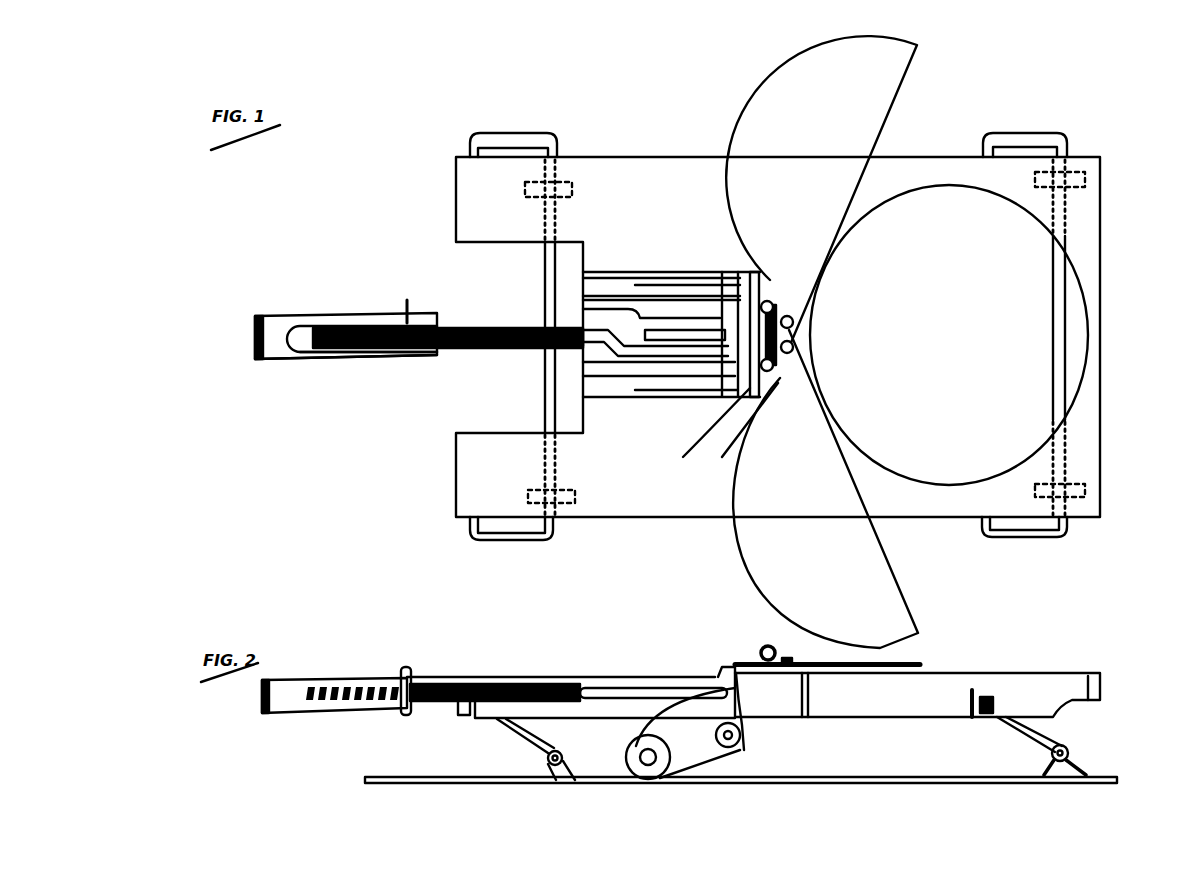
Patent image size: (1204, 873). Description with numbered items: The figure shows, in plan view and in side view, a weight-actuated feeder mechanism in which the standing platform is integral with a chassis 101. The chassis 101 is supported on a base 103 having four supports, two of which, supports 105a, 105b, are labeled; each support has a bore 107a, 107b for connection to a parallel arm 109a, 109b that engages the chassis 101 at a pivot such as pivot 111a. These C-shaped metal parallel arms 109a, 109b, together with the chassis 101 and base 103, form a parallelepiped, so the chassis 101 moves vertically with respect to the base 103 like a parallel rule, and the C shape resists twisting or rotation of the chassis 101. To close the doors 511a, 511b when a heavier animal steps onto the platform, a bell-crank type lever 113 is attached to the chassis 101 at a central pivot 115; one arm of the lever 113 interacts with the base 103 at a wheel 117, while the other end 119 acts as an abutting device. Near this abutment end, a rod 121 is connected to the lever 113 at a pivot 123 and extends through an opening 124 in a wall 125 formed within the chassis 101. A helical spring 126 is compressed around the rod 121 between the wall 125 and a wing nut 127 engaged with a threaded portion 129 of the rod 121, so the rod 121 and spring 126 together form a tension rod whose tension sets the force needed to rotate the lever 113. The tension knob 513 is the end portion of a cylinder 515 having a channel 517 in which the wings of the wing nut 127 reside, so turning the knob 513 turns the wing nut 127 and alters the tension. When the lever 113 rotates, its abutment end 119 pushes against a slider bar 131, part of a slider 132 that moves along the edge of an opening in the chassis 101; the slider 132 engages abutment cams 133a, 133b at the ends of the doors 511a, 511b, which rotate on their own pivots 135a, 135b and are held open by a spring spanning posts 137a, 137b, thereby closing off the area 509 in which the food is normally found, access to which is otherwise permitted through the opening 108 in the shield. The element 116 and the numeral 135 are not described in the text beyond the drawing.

In FIG. 1, the chassis 101 is at (655, 196).
In FIG. 2, the base 103 is at (445, 785).
In FIG. 1, the support 105a is at (560, 505).
In FIG. 2, the support 105a is at (575, 780).
In FIG. 1, the support 105b is at (1090, 505).
In FIG. 2, the support 105b is at (1060, 762).
In FIG. 1, the bore 107a is at (1020, 134).
In FIG. 2, the bore 107a is at (540, 776).
In FIG. 2, the bore 107b is at (1075, 752).
In FIG. 2, the opening 108 is at (978, 673).
In FIG. 2, the parallel arm 109a is at (505, 742).
In FIG. 1, the parallel arm 109b is at (527, 133).
In FIG. 2, the parallel arm 109b is at (1068, 732).
In FIG. 2, the pivot 111a is at (458, 705).
In FIG. 2, the lever 113 is at (688, 733).
In FIG. 2, the pivot 115 is at (730, 750).
In FIG. 2, the clamp 116 is at (993, 700).
In FIG. 1, the wheel 117 is at (583, 300).
In FIG. 2, the wheel 117 is at (652, 782).
In FIG. 2, the other end of the lever 119 is at (722, 668).
In FIG. 1, the rod 121 is at (583, 363).
In FIG. 2, the rod 121 is at (615, 672).
In FIG. 1, the pivot 123 is at (712, 272).
In FIG. 2, the pivot 123 is at (725, 672).
In FIG. 1, the opening 124 is at (583, 350).
In FIG. 1, the wall 125 is at (583, 322).
In FIG. 2, the wall 125 is at (578, 678).
In FIG. 1, the helical spring 126 is at (440, 350).
In FIG. 2, the helical spring 126 is at (440, 680).
In FIG. 1, the wing nut 127 is at (408, 297).
In FIG. 2, the wing nut 127 is at (405, 668).
In FIG. 1, the threaded portion 129 is at (345, 358).
In FIG. 2, the threaded portion 129 is at (345, 678).
In FIG. 1, the slider bar 131 is at (694, 427).
In FIG. 2, the slider bar 131 is at (740, 660).
In FIG. 1, the slider 132 is at (622, 272).
In FIG. 1, the abutment cam 133a is at (770, 285).
In FIG. 1, the abutment cam 133b is at (738, 433).
In FIG. 1, the spring 135 is at (800, 312).
In FIG. 1, the pivot 135a is at (805, 330).
In FIG. 1, the pivot 135b is at (805, 348).
In FIG. 1, the post 137a is at (800, 293).
In FIG. 1, the post 137b is at (790, 368).
In FIG. 1, the area 509 is at (946, 186).
In FIG. 1, the door 511a is at (821, 190).
In FIG. 1, the door 511b is at (825, 489).
In FIG. 2, the door 511b is at (920, 655).
In FIG. 1, the tension knob 513 is at (255, 336).
In FIG. 1, the cylinder 515 is at (303, 337).
In FIG. 1, the channel 517 is at (306, 336).